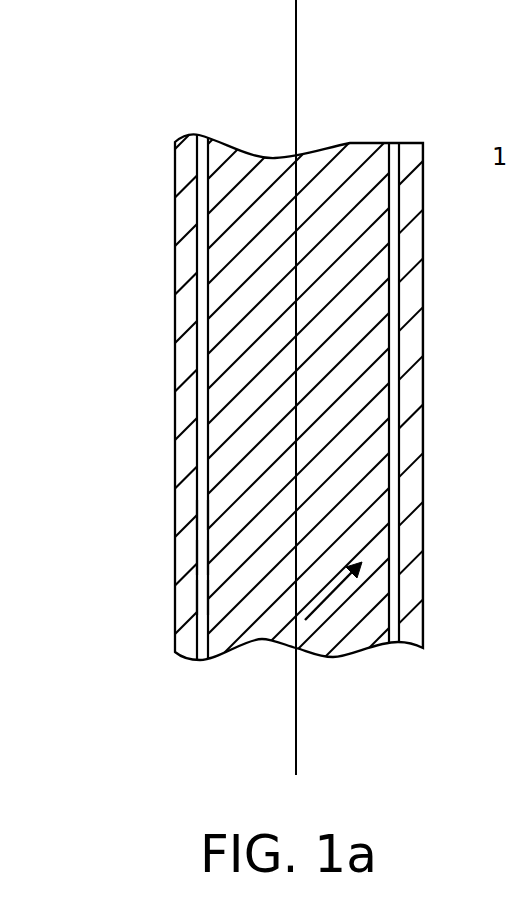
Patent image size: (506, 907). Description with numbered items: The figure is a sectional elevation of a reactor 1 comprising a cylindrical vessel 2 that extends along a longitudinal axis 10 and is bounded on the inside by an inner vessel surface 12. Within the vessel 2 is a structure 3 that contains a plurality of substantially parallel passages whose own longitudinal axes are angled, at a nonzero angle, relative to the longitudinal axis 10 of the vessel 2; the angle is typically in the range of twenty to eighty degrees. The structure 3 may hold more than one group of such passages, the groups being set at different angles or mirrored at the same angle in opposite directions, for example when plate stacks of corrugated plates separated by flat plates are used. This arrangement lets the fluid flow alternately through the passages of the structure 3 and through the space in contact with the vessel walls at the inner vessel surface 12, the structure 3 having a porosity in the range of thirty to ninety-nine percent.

The reactor 1 is at (148, 208).
The vessel 2 is at (423, 305).
The structure 3 is at (389, 468).
The longitudinal axis 10 is at (297, 58).
The inner vessel surface 12 is at (197, 452).